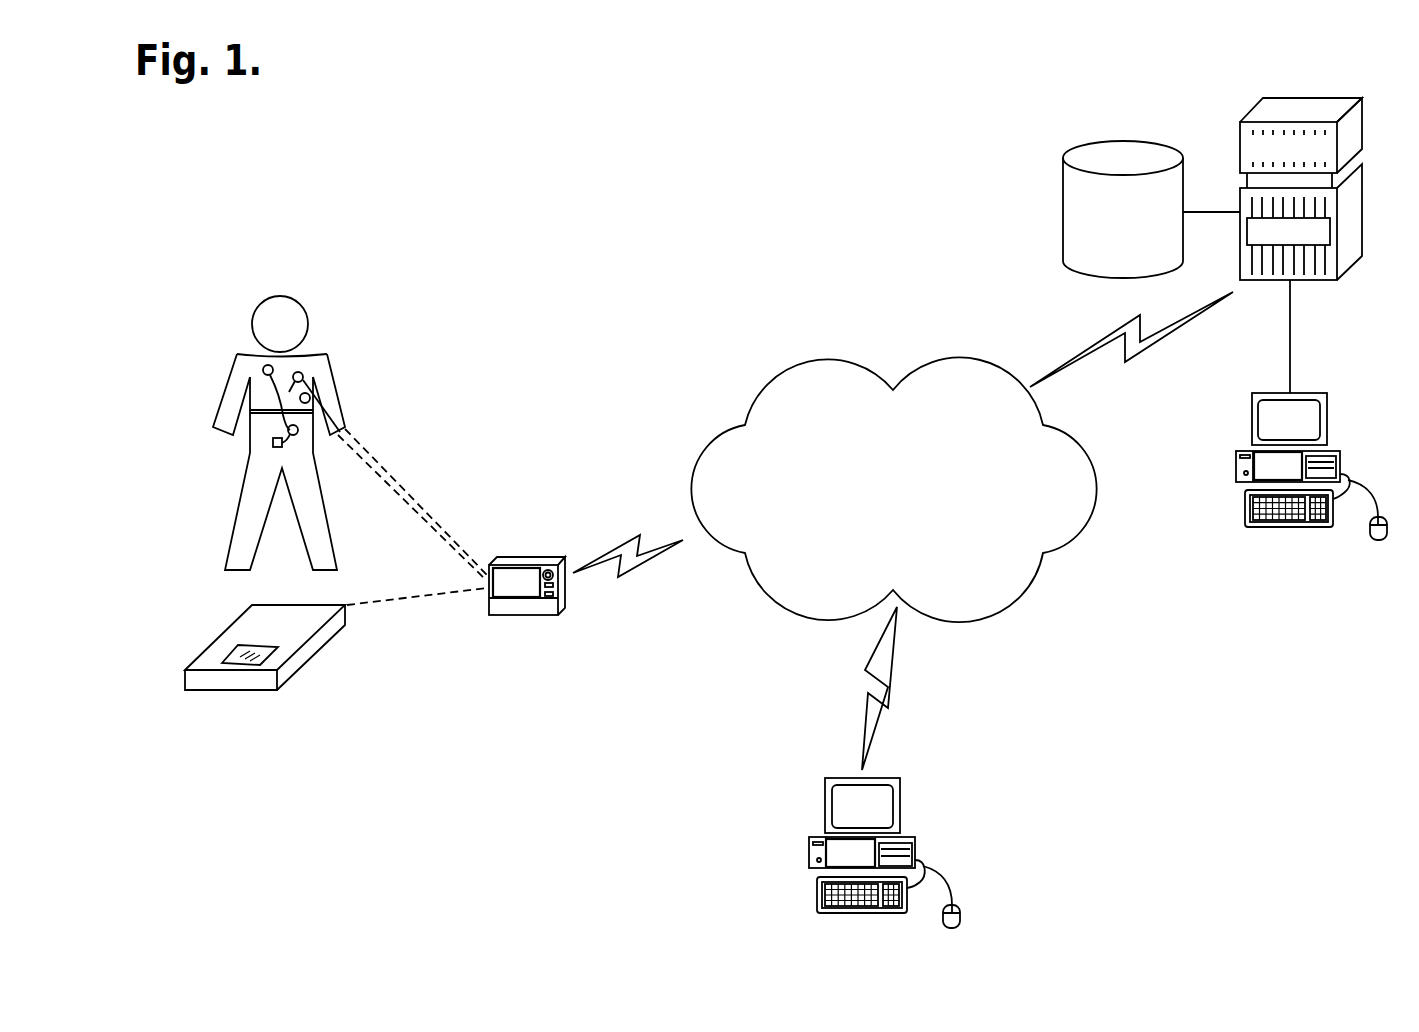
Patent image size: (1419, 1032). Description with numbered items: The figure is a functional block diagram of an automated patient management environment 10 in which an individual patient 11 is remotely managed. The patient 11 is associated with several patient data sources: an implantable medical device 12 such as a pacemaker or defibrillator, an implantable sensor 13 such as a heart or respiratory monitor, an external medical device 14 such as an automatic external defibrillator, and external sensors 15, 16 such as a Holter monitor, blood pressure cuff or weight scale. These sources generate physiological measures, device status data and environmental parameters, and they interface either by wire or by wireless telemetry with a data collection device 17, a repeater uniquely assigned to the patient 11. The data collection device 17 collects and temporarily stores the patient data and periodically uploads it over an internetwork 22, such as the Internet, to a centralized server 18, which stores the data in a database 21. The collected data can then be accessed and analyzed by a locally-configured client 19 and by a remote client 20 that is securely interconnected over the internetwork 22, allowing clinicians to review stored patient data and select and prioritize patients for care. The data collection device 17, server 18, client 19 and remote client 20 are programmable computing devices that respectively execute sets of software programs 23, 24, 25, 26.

The automated patient management environment 10 is at (241, 139).
The patient 11 is at (250, 452).
The implantable medical device 12 is at (303, 375).
The implantable sensor 13 is at (326, 406).
The external medical device 14 is at (262, 372).
The external sensor 15 is at (250, 411).
The external sensor 16 is at (318, 650).
The data collection device 17 is at (528, 557).
The server 18 is at (1364, 198).
The client 19 is at (1328, 421).
The remote client 20 is at (901, 806).
The database 21 is at (1063, 205).
The internetwork 22 is at (801, 370).
The software programs 23 is at (526, 616).
The software programs 24 is at (1331, 228).
The software programs 25 is at (1236, 466).
The software programs 26 is at (809, 855).